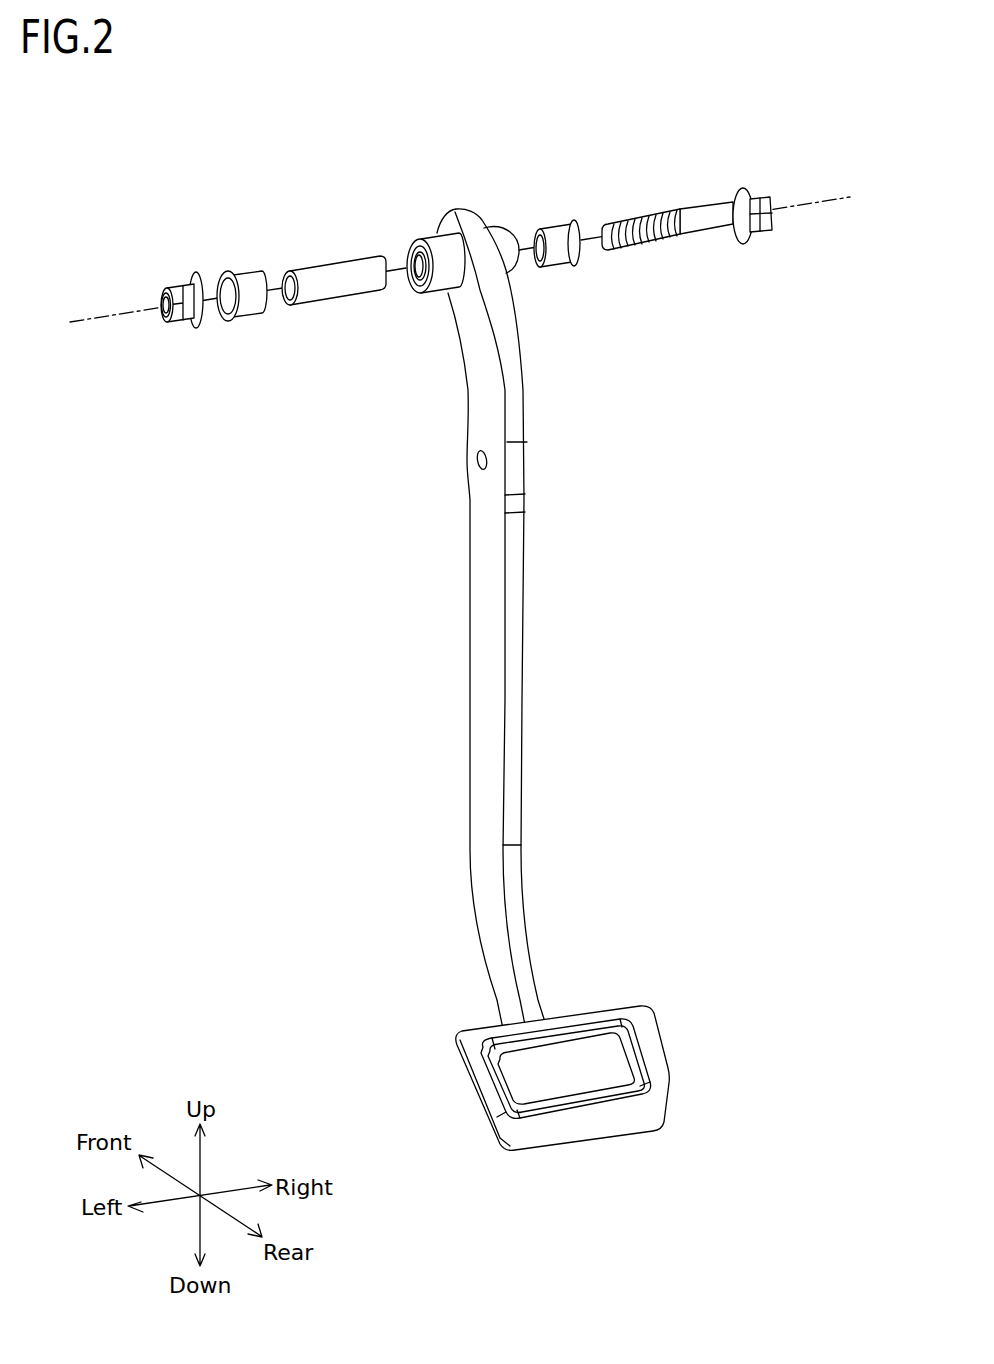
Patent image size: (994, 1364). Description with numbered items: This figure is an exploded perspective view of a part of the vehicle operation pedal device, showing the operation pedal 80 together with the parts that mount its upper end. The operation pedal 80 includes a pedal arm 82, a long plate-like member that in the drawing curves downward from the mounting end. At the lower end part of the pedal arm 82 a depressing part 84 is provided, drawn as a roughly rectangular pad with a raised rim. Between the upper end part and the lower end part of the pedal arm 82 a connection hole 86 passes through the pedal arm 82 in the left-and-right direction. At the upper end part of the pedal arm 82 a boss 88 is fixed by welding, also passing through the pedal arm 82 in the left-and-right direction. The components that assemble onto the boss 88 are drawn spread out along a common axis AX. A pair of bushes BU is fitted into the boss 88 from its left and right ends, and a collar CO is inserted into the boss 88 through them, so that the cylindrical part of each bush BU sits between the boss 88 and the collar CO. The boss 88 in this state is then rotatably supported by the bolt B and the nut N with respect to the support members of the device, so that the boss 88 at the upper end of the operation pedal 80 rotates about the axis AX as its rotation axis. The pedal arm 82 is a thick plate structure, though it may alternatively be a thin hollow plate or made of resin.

The operation pedal 80 is at (512, 710).
The pedal arm 82 is at (516, 705).
The depressing part 84 is at (573, 1087).
The connection hole 86 is at (467, 473).
The boss 88 is at (441, 284).
The axis AX is at (104, 318).
The nut N is at (187, 318).
The bush BU is at (253, 320).
The collar CO is at (330, 290).
The bolt B is at (770, 223).